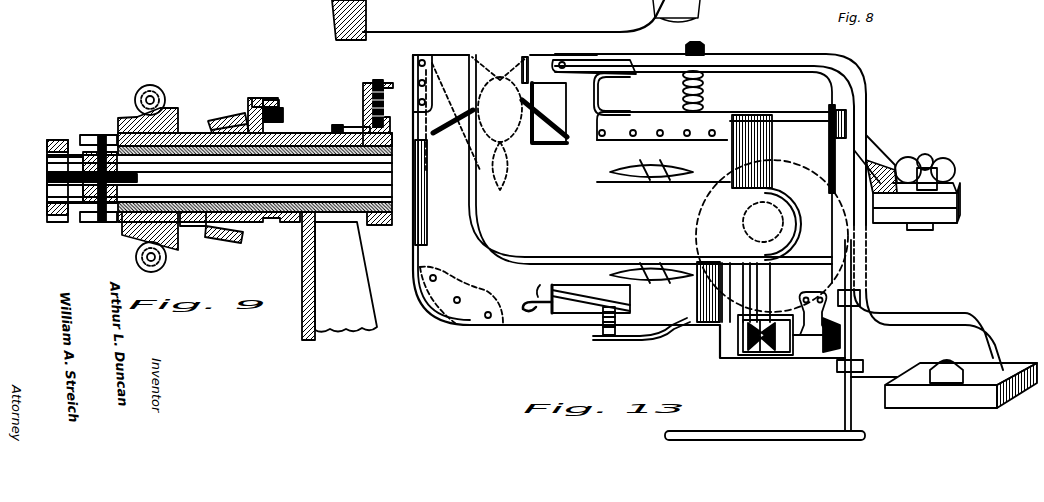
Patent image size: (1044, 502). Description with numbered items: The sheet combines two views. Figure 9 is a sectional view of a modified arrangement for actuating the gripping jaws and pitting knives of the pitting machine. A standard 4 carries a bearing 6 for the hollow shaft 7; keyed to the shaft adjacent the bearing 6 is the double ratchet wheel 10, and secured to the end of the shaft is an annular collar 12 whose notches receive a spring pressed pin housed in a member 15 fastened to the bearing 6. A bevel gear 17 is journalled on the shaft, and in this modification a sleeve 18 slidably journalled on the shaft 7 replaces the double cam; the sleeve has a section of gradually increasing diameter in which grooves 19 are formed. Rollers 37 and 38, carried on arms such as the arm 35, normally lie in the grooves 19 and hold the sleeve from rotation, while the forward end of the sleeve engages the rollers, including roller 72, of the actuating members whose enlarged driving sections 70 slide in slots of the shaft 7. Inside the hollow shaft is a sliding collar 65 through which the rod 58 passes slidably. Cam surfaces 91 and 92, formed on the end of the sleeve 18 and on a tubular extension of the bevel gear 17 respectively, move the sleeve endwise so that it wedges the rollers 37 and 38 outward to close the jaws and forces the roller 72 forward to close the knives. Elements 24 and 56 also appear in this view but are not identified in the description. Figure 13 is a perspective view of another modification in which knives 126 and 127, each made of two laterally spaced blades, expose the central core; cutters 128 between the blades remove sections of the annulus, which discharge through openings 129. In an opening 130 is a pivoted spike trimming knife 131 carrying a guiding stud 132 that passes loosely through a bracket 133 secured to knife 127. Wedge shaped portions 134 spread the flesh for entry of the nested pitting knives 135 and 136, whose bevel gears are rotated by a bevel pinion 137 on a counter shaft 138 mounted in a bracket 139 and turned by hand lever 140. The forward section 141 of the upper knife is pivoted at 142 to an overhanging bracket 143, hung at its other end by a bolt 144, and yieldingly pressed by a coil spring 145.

In FIG. 9, the standard 4 is at (339, 276).
In FIG. 9, the bearing 6 is at (318, 133).
In FIG. 9, the hollow shaft 7 is at (290, 202).
In FIG. 9, the double ratchet wheel 10 is at (270, 222).
In FIG. 9, the annular ring or collar 12 is at (385, 225).
In FIG. 9, the member 15 is at (363, 88).
In FIG. 9, the bevel gear 17 is at (283, 110).
In FIG. 9, the sleeve 18 is at (210, 120).
In FIG. 9, the grooves 19 is at (200, 118).
In FIG. 9, the pin 24 is at (276, 100).
In FIG. 9, the arm 35 is at (135, 92).
In FIG. 9, the roller 37 is at (150, 85).
In FIG. 9, the roller 38 is at (164, 258).
In FIG. 9, the lower roller 56 is at (136, 257).
In FIG. 9, the rod 58 is at (190, 184).
In FIG. 9, the sliding collar 65 is at (140, 180).
In FIG. 9, the enlarged driving sections 70 is at (74, 218).
In FIG. 9, the roller 72 is at (98, 135).
In FIG. 9, the cam surface 91 is at (214, 122).
In FIG. 9, the cam surface 92 is at (255, 98).
In FIG. 13, the knife 126 is at (418, 78).
In FIG. 13, the knife 127 is at (461, 280).
In FIG. 13, the cutters 128 is at (600, 100).
In FIG. 13, the openings 129 is at (665, 142).
In FIG. 13, the opening 130 is at (552, 314).
In FIG. 13, the spike or tip trimming knife 131 is at (645, 322).
In FIG. 13, the guiding stud 132 is at (605, 338).
In FIG. 13, the bracket 133 is at (680, 338).
In FIG. 13, the wedge shaped portions 134 is at (750, 118).
In FIG. 13, the pitting knife 135 is at (783, 216).
In FIG. 13, the pitting knife 136 is at (797, 170).
In FIG. 13, the bevel pinion 137 is at (760, 358).
In FIG. 13, the counter shaft 138 is at (830, 355).
In FIG. 13, the bracket 139 is at (860, 272).
In FIG. 13, the hand lever 140 is at (752, 420).
In FIG. 13, the forward section 141 is at (629, 206).
In FIG. 13, the pivot 142 is at (620, 58).
In FIG. 13, the overhanging bracket 143 is at (780, 60).
In FIG. 13, the bolt 144 is at (704, 46).
In FIG. 13, the coil spring 145 is at (705, 104).